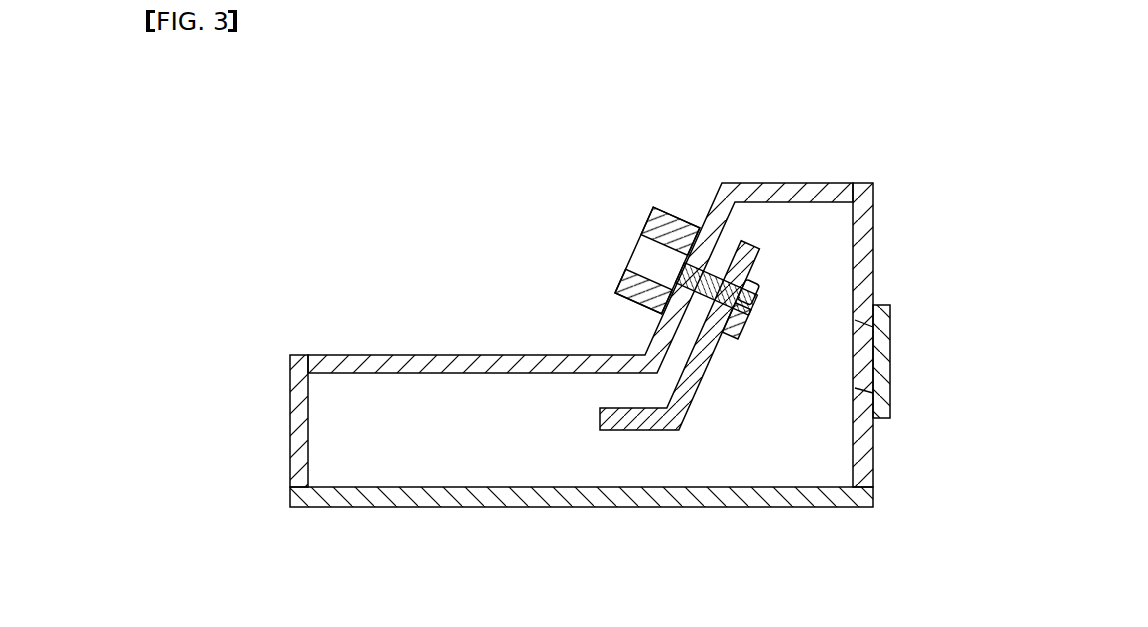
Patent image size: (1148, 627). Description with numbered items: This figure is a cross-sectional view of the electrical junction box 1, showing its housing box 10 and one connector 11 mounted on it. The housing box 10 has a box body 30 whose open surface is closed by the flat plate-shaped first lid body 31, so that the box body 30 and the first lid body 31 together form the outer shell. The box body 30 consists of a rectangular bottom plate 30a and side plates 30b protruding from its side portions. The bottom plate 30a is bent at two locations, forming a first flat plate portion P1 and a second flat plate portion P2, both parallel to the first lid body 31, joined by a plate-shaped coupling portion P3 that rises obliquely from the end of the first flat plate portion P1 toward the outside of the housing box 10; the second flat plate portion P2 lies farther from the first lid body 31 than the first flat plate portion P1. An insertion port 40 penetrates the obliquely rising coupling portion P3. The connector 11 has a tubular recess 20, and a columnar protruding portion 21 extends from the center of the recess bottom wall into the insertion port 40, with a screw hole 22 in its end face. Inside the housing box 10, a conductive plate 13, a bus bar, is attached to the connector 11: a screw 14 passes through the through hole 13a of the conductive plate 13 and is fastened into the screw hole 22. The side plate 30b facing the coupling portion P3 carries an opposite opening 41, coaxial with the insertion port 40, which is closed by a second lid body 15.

The electrical junction box 1 is at (257, 152).
The housing box 10 is at (318, 536).
The connector 11 is at (622, 242).
The conductive plate 13 is at (705, 380).
The through hole 13a is at (748, 292).
The screw 14 is at (757, 292).
The second lid body 15 is at (890, 368).
The recess 20 is at (657, 260).
The protruding portion 21 is at (716, 289).
The screw hole 22 is at (643, 291).
The box body 30 is at (478, 296).
The bottom plate 30a is at (427, 338).
The side plate 30b is at (292, 422).
The first lid body 31 is at (457, 500).
The insertion port 40 is at (670, 231).
The opposite opening 41 is at (890, 325).
The first flat plate portion P1 is at (362, 355).
The second flat plate portion P2 is at (800, 183).
The coupling portion P3 is at (712, 205).